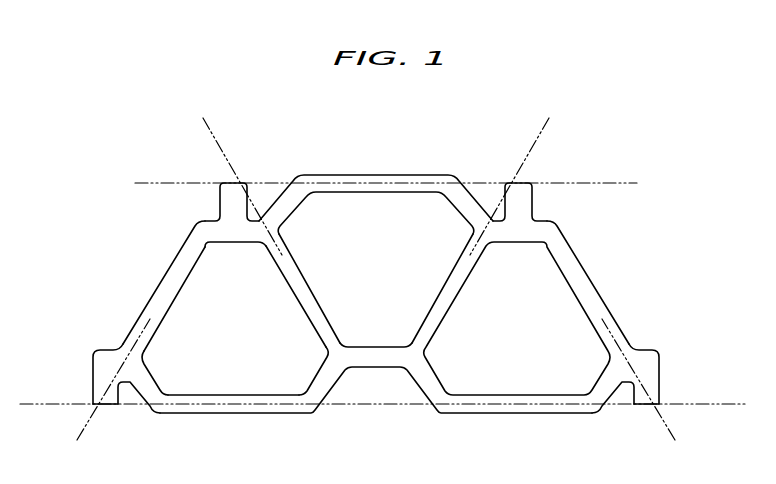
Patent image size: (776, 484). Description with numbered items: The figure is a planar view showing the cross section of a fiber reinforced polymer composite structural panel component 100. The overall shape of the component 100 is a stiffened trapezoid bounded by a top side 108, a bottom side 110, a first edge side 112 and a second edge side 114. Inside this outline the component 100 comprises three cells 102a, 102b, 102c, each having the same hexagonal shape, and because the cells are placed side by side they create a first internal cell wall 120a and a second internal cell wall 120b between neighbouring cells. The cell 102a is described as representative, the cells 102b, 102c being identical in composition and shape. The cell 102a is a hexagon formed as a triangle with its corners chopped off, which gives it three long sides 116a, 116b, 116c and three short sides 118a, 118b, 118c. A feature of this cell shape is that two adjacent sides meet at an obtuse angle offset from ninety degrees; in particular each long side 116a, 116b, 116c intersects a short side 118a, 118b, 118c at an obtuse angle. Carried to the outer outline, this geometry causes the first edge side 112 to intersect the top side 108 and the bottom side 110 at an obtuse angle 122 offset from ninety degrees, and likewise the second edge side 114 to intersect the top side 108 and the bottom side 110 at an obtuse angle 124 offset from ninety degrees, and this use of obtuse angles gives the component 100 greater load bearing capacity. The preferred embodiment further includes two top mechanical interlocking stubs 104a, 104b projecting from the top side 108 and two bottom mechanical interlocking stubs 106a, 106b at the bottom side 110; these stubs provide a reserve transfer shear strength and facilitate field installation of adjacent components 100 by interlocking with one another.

The fiber reinforced polymer composite component 100 is at (629, 103).
The cell 102a is at (235, 348).
The cell 102b is at (376, 236).
The cell 102c is at (518, 380).
The top mechanical interlocking stub 104a is at (236, 183).
The top mechanical interlocking stub 104b is at (516, 183).
The bottom mechanical interlocking stub 106a is at (105, 406).
The bottom mechanical interlocking stub 106b is at (647, 406).
The top side 108 is at (344, 176).
The bottom side 110 is at (314, 415).
The first edge side 112 is at (165, 276).
The second edge side 114 is at (592, 289).
The long side 116a is at (176, 283).
The long side 116b is at (298, 297).
The long side 116c is at (200, 396).
The short side 118a is at (235, 243).
The short side 118b is at (148, 375).
The short side 118c is at (318, 376).
The first internal cell wall 120a is at (298, 284).
The second internal cell wall 120b is at (456, 284).
The obtuse angle 122 is at (97, 396).
The obtuse angle 124 is at (655, 396).